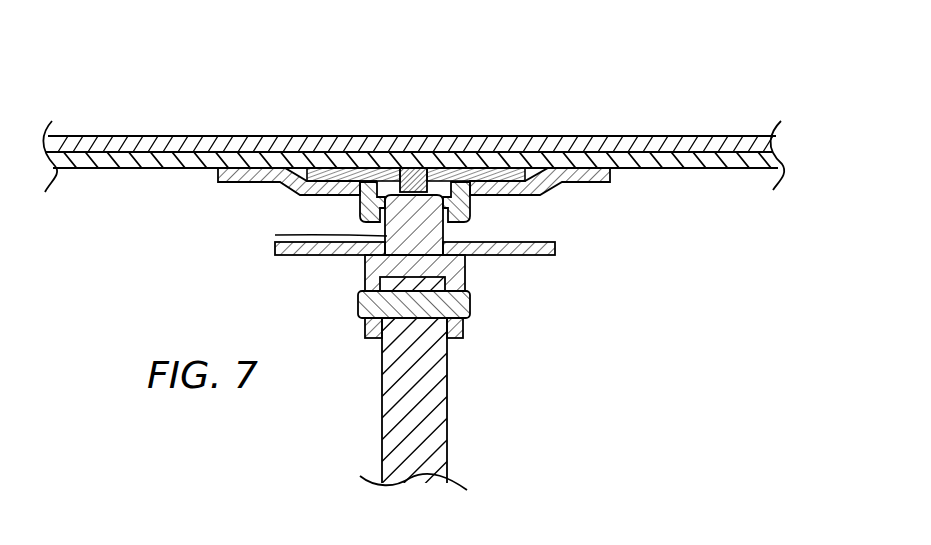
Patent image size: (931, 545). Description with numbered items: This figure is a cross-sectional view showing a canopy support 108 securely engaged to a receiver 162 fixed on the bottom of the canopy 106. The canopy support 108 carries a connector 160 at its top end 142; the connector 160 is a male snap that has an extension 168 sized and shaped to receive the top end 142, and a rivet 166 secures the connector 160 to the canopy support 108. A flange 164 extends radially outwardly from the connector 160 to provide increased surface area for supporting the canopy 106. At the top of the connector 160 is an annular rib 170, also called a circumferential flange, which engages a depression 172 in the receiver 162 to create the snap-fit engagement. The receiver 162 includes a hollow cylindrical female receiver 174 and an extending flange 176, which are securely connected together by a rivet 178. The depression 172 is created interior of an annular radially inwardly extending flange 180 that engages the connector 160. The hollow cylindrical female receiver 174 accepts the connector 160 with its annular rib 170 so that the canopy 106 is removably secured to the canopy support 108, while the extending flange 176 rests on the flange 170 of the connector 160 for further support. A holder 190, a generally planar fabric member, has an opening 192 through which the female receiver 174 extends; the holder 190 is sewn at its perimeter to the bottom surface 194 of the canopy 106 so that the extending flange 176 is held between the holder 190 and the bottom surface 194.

The canopy 106 is at (439, 147).
The canopy support 108 is at (448, 457).
The top end 142 is at (446, 395).
The connector 160 is at (443, 223).
The receiver 162 is at (472, 207).
The flange 164 is at (555, 251).
The rivet 166 is at (472, 308).
The extension 168 is at (362, 270).
The annular rib 170 is at (431, 230).
The depression 172 is at (490, 150).
The hollow cylindrical female receiver 174 is at (377, 216).
The extending flange 176 is at (325, 168).
The rivet 178 is at (415, 170).
The annular radially inwardly extending flange 180 is at (275, 235).
The holder 190 is at (298, 189).
The opening 192 is at (358, 168).
The bottom surface 194 is at (113, 170).